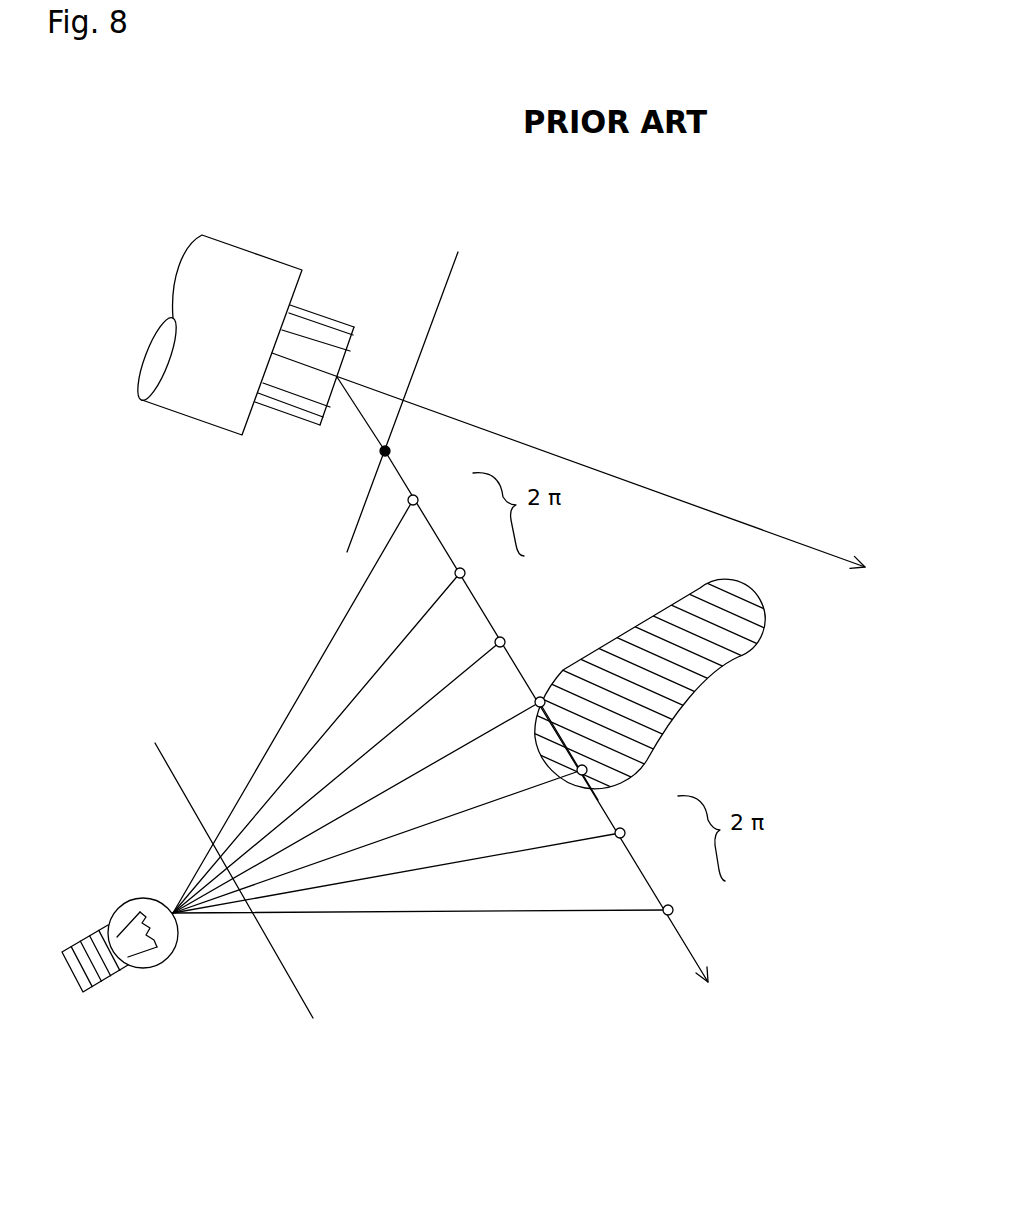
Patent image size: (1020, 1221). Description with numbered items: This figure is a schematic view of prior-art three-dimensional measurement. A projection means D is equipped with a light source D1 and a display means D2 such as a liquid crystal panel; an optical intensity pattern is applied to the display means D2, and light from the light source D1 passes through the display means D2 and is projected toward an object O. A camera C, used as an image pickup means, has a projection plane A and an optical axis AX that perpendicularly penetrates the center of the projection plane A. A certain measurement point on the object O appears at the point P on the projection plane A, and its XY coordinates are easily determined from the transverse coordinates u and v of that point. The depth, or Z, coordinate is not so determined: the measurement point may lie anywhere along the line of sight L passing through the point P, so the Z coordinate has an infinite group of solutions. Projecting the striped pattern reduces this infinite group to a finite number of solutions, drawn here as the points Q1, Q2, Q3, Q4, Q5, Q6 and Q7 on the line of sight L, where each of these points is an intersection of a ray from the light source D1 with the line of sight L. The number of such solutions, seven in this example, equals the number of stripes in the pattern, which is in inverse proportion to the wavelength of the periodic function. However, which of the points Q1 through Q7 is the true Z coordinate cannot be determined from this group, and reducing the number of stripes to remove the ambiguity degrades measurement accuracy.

The camera C is at (253, 270).
The projection plane A is at (440, 302).
The optical axis AX is at (797, 542).
The point P(u, v) P is at (389, 447).
The line of sight L is at (693, 943).
The point Q1 is at (437, 490).
The point Q2 is at (480, 561).
The point Q3 is at (520, 631).
The point Q4 is at (543, 697).
The point Q5 is at (587, 769).
The point Q6 is at (644, 824).
The point Q7 is at (686, 896).
The object O is at (745, 615).
The light source D1 is at (125, 910).
The display means D2 is at (300, 988).
The projection means D is at (224, 1010).